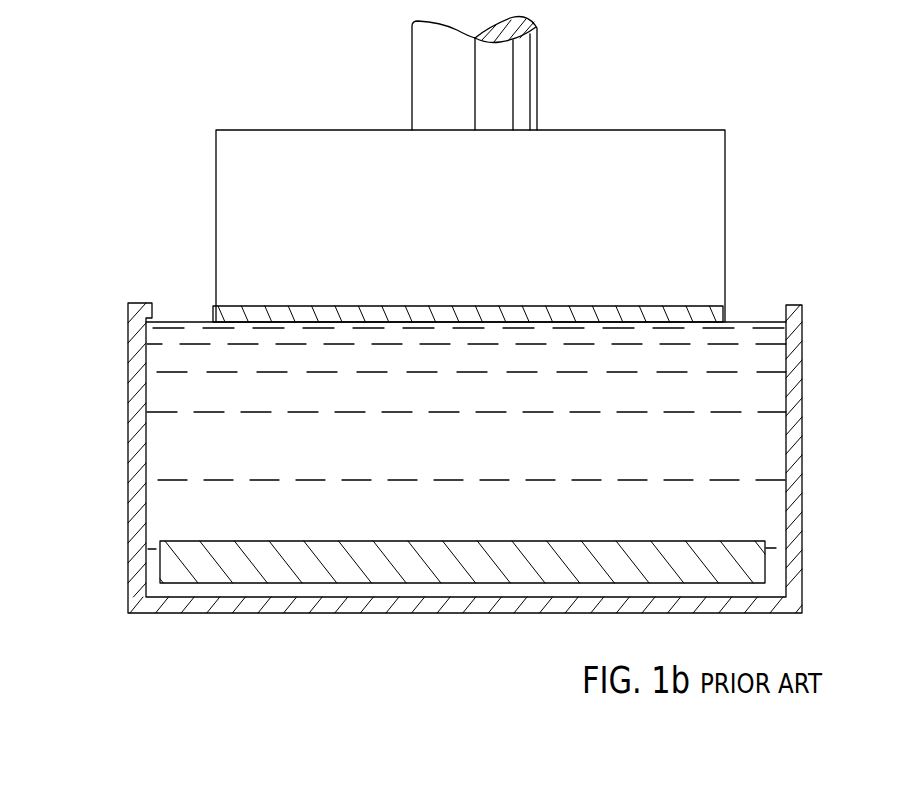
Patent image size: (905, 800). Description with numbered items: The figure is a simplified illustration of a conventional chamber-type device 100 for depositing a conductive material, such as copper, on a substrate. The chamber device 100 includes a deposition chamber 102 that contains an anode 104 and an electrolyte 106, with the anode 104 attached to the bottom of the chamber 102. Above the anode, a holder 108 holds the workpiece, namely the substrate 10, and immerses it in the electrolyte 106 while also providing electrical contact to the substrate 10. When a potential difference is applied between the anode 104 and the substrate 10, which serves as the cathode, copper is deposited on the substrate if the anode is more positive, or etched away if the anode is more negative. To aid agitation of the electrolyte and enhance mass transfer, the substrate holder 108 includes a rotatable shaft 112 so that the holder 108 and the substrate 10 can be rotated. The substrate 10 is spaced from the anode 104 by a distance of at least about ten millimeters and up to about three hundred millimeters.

The chamber-type device 100 is at (178, 148).
The deposition chamber 102 is at (127, 508).
The anode 104 is at (765, 565).
The electrolyte 106 is at (772, 433).
The holder 108 is at (725, 218).
The substrate 10 is at (721, 314).
The rotatable shaft 112 is at (538, 78).